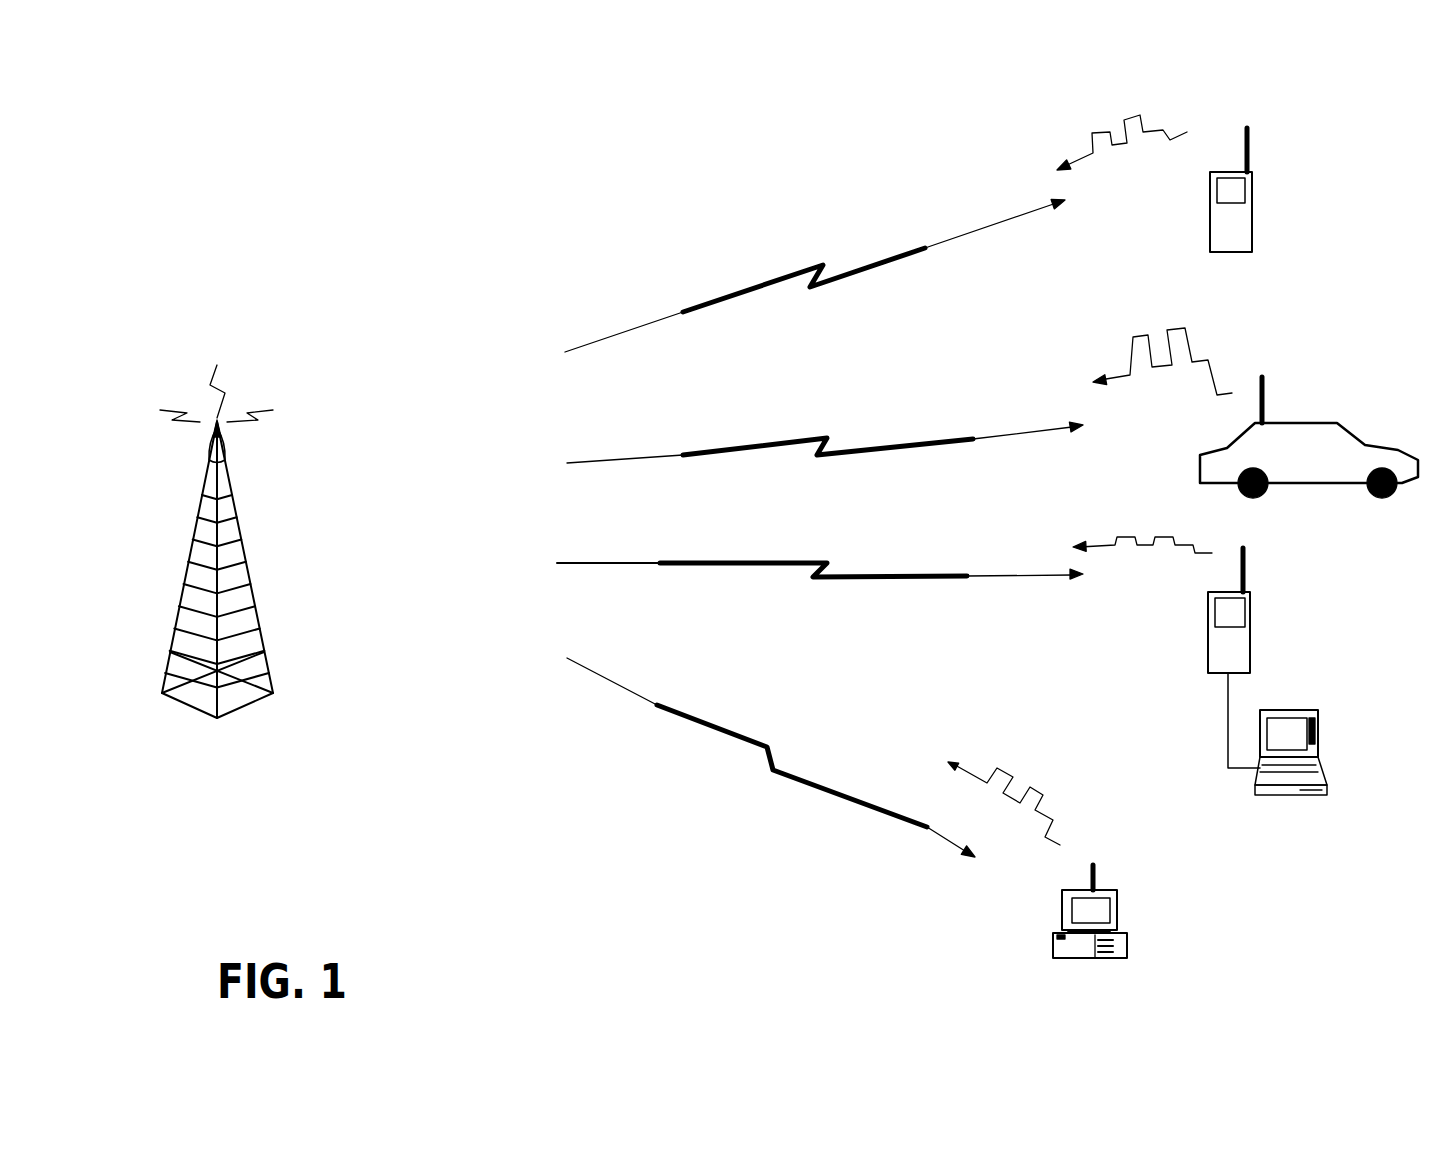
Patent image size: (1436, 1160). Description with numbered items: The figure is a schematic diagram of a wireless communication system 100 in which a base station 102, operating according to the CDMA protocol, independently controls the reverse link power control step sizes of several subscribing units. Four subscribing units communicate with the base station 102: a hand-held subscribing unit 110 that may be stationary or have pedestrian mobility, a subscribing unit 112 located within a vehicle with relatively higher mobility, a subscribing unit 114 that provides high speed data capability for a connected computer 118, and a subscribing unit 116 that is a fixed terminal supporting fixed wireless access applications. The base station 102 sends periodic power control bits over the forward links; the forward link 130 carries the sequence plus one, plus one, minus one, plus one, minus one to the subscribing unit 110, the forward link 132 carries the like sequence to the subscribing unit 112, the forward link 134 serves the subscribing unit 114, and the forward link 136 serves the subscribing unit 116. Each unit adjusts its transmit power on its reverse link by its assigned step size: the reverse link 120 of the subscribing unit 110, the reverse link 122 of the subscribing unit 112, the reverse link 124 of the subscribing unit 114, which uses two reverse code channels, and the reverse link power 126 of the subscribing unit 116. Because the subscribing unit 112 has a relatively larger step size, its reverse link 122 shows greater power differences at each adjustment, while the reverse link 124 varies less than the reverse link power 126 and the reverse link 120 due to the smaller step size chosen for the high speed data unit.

The wireless communication system 100 is at (860, 980).
The base station 102 is at (273, 683).
The subscribing unit 110 is at (1252, 205).
The subscribing unit 112 is at (1310, 420).
The subscribing unit 114 is at (1250, 633).
The subscribing unit 116 is at (1117, 921).
The computer 118 is at (1318, 735).
The reverse link 120 is at (1120, 143).
The reverse link 122 is at (1165, 367).
The reverse link 124 is at (1145, 545).
The reverse link power 126 is at (1037, 787).
The forward link 130 is at (683, 314).
The forward link 132 is at (683, 457).
The forward link 134 is at (670, 566).
The forward link 136 is at (657, 707).